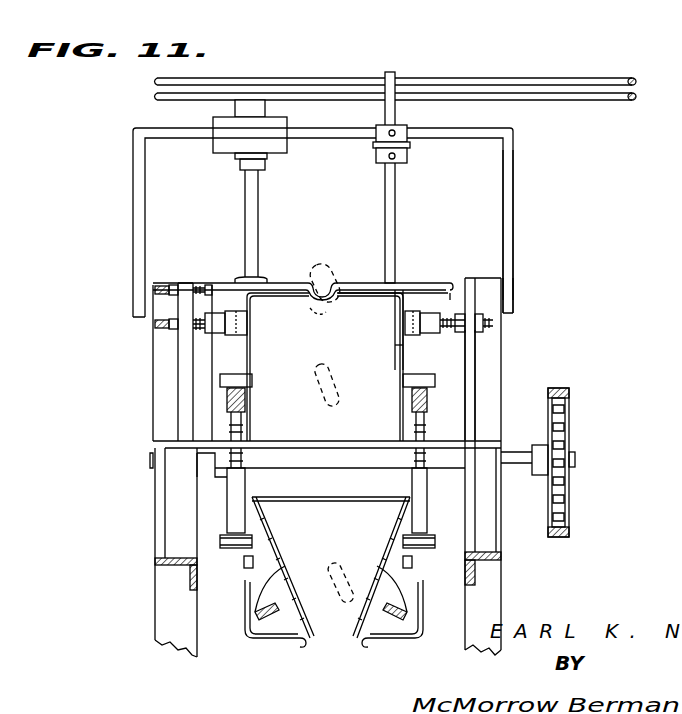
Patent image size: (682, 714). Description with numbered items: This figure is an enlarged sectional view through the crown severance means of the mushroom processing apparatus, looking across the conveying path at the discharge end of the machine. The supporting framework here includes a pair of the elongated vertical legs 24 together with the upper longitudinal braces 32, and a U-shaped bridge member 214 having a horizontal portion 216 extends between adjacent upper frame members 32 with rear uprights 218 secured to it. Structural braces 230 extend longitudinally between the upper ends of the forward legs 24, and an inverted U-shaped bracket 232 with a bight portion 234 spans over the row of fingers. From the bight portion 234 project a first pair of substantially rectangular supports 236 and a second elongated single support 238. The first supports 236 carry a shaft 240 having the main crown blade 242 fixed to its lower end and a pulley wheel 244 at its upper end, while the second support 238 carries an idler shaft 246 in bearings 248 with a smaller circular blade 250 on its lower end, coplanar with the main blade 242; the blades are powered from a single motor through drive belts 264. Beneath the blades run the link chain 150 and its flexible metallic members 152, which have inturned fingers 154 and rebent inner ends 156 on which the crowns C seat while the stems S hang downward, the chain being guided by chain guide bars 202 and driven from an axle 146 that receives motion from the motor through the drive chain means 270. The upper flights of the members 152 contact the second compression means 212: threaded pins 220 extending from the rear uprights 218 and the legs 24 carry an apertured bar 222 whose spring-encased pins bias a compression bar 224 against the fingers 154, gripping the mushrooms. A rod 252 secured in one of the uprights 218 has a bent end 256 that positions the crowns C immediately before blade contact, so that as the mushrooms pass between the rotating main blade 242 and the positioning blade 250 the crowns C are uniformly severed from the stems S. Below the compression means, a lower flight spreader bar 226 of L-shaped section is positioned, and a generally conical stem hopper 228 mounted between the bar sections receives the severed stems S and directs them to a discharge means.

The pulley wheel 244 is at (230, 78).
The drive belts 264 is at (575, 80).
The bight portions 234 is at (476, 128).
The inverted U-shaped brackets 232 is at (513, 184).
The structural braces 230 is at (503, 285).
The first rectangular supports 236 is at (292, 130).
The shaft 240 is at (258, 226).
The idler shaft 246 is at (395, 219).
The second elongated single support 238 is at (410, 145).
The bearings 248 is at (383, 163).
The main crown blade 242 is at (285, 284).
The circular blade 250 is at (402, 283).
The threaded pins 220 is at (456, 302).
The rod 252 is at (273, 300).
The inturned fingers 154 is at (372, 298).
The flexible metallic members 152 is at (405, 307).
The bar 222 is at (440, 330).
The compression bar 224 is at (410, 338).
The bent end 256 is at (302, 290).
The crowns C is at (333, 268).
The stems S is at (310, 314).
The rebent inner ends 156 is at (335, 312).
The rear uprights 218 is at (185, 400).
The vertical legs 24 is at (487, 297).
The second compression means 212 is at (478, 355).
The U-shaped bridge member 214 is at (510, 535).
The upper longitudinal braces 32 is at (497, 560).
The horizontal portion 216 is at (300, 444).
The chain guide bars 202 is at (432, 397).
The link chain 150 is at (425, 548).
The stem hopper 228 is at (345, 632).
The lower flight spreader bar 226 is at (262, 600).
The axle 146 is at (517, 465).
The drive chain means 270 is at (575, 488).